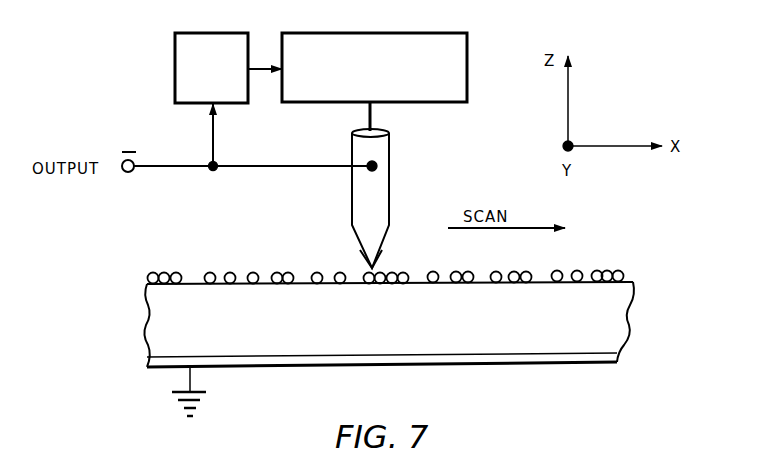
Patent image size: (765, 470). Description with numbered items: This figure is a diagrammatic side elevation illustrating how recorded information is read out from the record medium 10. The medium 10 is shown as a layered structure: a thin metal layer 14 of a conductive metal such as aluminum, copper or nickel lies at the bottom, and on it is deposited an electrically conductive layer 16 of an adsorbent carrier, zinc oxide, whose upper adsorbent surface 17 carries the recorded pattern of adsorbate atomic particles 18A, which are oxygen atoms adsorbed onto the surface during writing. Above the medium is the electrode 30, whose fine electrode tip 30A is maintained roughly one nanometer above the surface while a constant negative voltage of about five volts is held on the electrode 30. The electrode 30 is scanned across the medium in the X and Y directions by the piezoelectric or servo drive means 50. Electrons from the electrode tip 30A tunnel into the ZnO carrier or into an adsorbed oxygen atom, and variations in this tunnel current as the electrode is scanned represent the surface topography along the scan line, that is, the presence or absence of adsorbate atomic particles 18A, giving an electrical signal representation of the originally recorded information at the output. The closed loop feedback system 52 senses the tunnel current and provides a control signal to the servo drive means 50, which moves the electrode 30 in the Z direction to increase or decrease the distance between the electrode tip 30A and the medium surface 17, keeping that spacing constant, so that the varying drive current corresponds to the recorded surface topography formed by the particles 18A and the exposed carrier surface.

The medium 10 is at (598, 262).
The thin metal layer 14 is at (150, 362).
The electrically conductive layer of adsorbent carrier 16 is at (147, 321).
The adsorbent surface 17 is at (202, 282).
The adsorbate atomic particles 18A is at (177, 272).
The electrode 30 is at (392, 158).
The electrode tip 30A is at (365, 260).
The piezoelectric or servo drive means 50 is at (387, 31).
The closed loop feedback system 52 is at (175, 69).